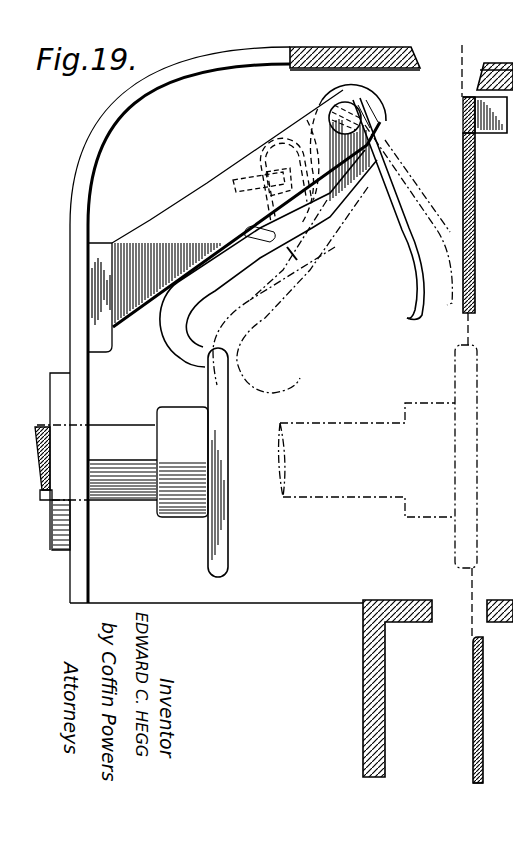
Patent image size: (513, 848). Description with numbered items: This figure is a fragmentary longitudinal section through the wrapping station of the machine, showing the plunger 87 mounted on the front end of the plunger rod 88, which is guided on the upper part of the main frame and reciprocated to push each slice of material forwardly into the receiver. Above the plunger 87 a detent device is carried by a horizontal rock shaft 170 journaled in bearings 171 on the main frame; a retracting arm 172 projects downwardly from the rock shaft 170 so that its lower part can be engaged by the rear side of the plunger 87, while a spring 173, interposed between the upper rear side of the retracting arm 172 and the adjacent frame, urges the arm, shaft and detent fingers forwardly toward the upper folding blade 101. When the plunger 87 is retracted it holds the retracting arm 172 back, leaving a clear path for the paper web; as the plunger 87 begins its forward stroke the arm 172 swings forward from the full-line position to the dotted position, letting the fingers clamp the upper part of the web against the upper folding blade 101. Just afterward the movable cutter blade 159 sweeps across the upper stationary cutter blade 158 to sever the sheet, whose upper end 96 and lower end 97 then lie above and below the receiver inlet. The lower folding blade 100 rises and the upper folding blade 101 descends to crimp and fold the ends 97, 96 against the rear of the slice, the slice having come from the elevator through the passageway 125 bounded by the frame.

The plunger 87 is at (229, 557).
The plunger rod 88 is at (106, 432).
The upper end of the sheet 96 is at (462, 92).
The lower end of the sheet 97 is at (476, 788).
The lower folding blade 100 is at (484, 694).
The upper folding blade 101 is at (474, 212).
The passageway 125 is at (438, 688).
The upper stationary cutter blade 158 is at (414, 70).
The movable cutter blade 159 is at (495, 65).
The rock shaft 170 is at (333, 112).
The bearings 171 is at (283, 131).
The retracting arm 172 is at (170, 320).
The spring 173 is at (242, 233).